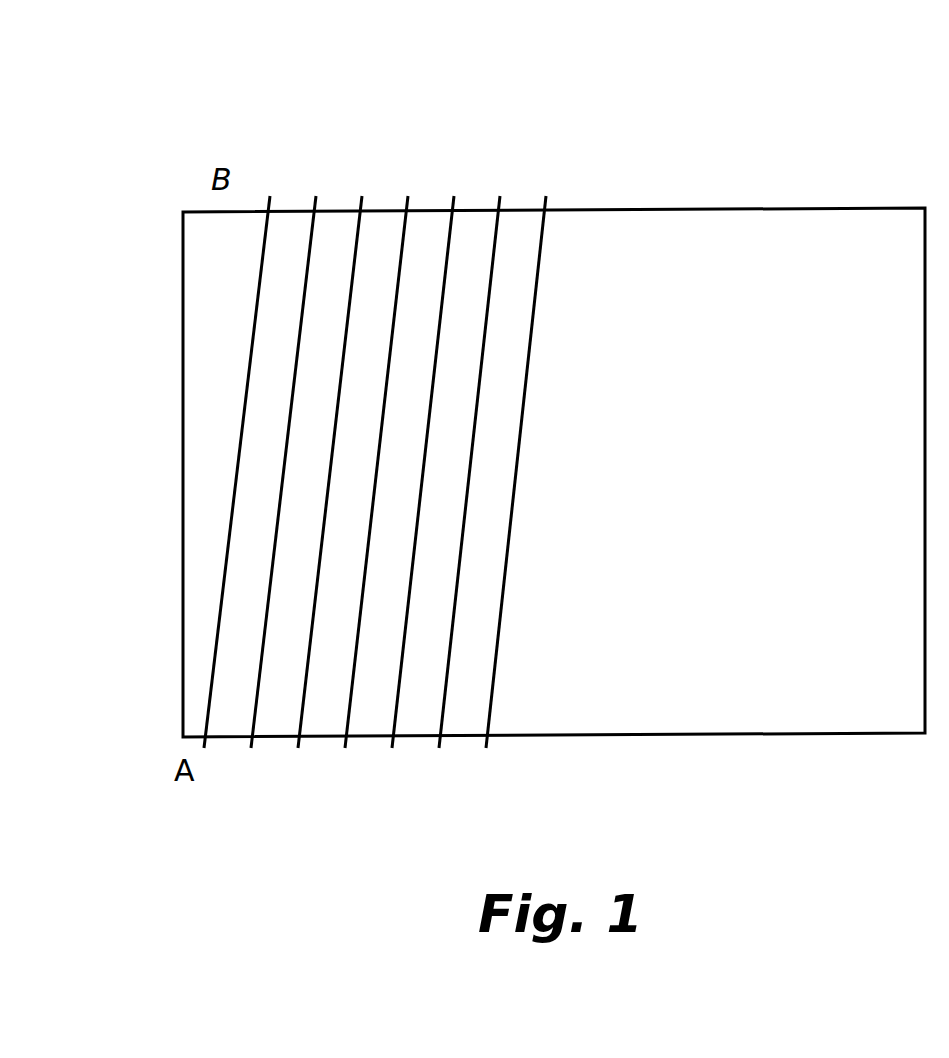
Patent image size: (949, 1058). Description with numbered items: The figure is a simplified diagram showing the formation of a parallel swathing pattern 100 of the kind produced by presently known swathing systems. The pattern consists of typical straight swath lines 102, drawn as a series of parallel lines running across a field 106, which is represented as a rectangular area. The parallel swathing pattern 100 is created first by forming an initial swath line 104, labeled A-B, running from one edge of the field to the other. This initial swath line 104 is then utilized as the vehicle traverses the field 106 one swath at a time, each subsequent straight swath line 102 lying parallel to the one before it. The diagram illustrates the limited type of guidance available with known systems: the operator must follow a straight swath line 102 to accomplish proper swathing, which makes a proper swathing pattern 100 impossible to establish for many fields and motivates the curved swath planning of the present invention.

The parallel swathing pattern 100 is at (554, 397).
The straight swath lines 102 is at (434, 362).
The initial swath line 104 is at (237, 458).
The field 106 is at (751, 452).